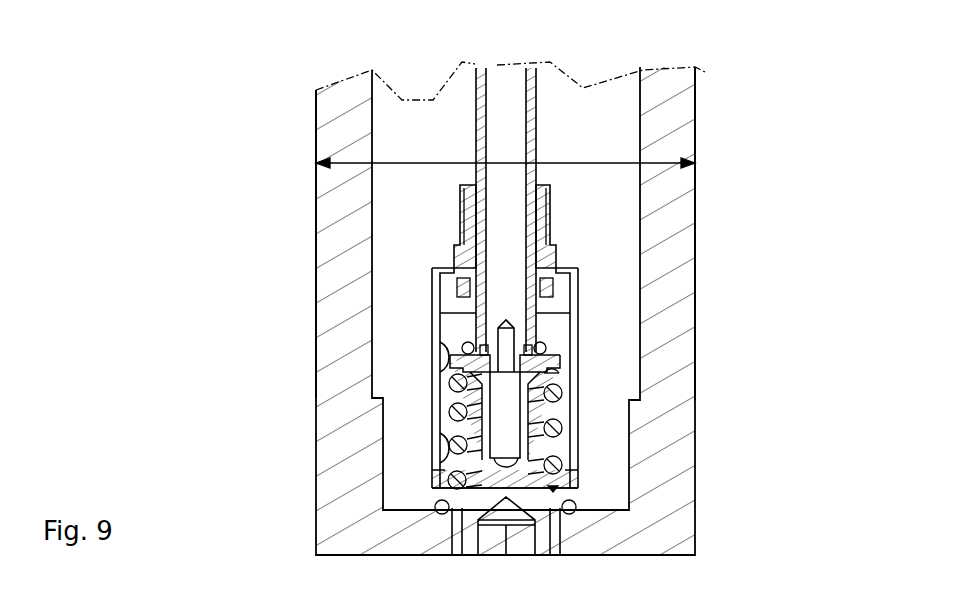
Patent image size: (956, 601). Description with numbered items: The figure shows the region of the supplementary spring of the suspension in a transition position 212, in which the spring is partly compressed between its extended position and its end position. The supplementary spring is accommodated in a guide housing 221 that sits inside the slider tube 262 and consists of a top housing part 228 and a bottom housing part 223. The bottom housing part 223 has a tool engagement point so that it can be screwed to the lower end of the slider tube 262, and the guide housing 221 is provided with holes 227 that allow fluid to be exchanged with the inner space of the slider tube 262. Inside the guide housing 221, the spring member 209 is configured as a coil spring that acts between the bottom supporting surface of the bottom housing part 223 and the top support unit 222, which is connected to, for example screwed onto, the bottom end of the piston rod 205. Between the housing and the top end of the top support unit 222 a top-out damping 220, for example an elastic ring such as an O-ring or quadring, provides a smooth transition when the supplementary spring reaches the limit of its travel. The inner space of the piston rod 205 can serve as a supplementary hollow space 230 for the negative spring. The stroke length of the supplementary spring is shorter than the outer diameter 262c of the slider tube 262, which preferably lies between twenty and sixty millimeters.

The transition position 212 is at (256, 138).
The slider tube 262 is at (338, 90).
The outer diameter of the tube 262c is at (604, 163).
The supplementary hollow space 230 is at (500, 110).
The piston rod 205 is at (530, 110).
The top housing part 228 is at (556, 262).
The guide housing 221 is at (431, 266).
The top-out damping 220 is at (432, 357).
The holes 227 is at (432, 455).
The top support unit 222 is at (548, 362).
The spring member 209 is at (562, 428).
The bottom housing part 223 is at (447, 492).